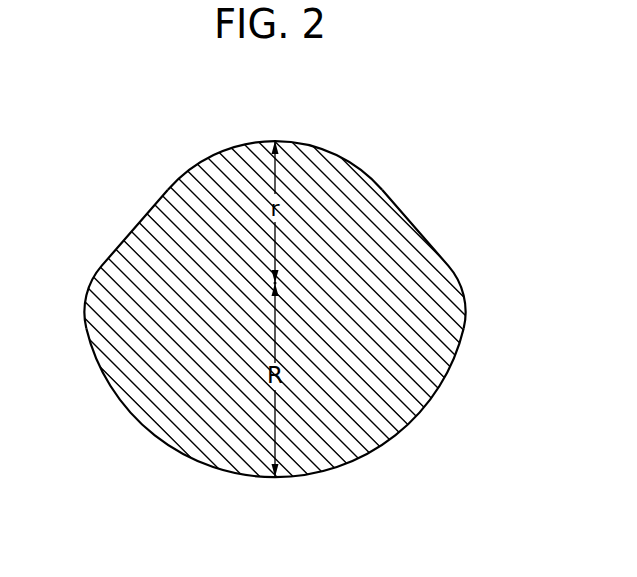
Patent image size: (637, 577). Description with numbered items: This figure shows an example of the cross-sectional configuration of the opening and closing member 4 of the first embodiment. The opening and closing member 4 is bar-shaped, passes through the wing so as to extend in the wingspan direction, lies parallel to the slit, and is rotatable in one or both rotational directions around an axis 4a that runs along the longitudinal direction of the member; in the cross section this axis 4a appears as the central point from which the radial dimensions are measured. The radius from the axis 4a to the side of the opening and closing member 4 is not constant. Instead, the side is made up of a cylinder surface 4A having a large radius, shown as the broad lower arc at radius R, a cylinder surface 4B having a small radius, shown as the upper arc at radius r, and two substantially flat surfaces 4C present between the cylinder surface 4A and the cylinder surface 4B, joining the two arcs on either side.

The opening and closing member 4 is at (318, 307).
The axis 4a is at (278, 282).
The cylinder surface having a large radius 4A is at (168, 442).
The cylinder surface having a small radius 4B is at (307, 141).
The substantially flat surfaces 4C is at (152, 208).